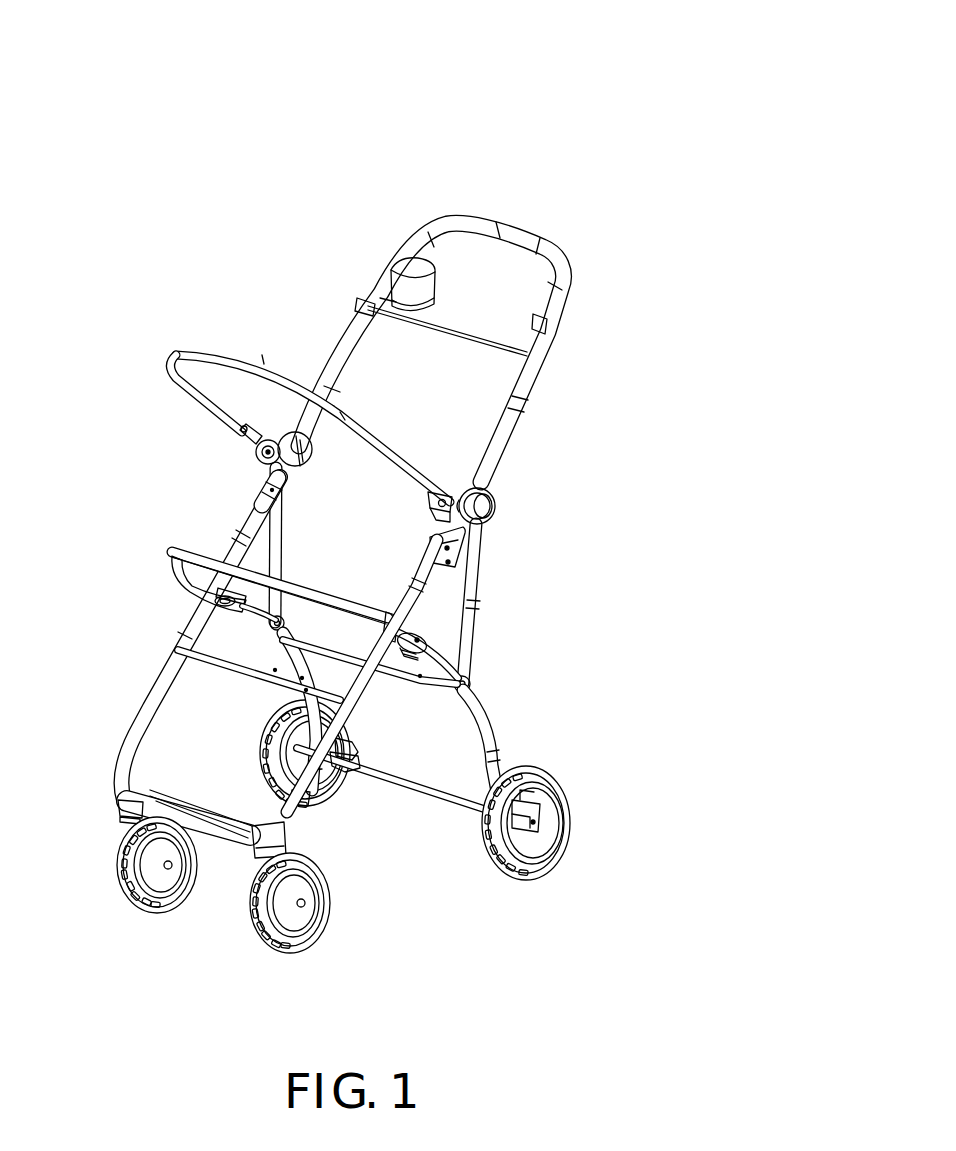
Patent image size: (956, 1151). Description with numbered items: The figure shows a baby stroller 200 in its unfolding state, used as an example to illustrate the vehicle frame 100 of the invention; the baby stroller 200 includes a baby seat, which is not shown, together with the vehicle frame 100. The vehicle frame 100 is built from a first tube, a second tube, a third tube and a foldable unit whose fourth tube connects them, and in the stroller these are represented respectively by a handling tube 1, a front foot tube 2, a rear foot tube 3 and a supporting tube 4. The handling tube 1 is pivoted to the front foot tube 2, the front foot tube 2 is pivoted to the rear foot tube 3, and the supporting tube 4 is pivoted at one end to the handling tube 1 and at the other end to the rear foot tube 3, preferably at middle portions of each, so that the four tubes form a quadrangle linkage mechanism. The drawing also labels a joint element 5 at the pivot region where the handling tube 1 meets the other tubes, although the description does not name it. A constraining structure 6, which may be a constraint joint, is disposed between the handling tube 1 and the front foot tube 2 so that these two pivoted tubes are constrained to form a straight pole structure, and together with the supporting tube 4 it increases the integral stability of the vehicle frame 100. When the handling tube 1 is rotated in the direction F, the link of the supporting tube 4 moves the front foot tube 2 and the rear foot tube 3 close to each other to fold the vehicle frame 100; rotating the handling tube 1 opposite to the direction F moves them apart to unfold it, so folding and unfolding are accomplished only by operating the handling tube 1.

The handling tube 1 is at (322, 360).
The front foot tube 2 is at (226, 545).
The rear foot tube 3 is at (252, 617).
The supporting tube 4 is at (266, 526).
The joint / hub 5 is at (258, 432).
The constraining structure 6 is at (425, 548).
The vehicle frame 100 is at (369, 522).
The baby stroller 200 is at (72, 47).
The direction F is at (640, 274).